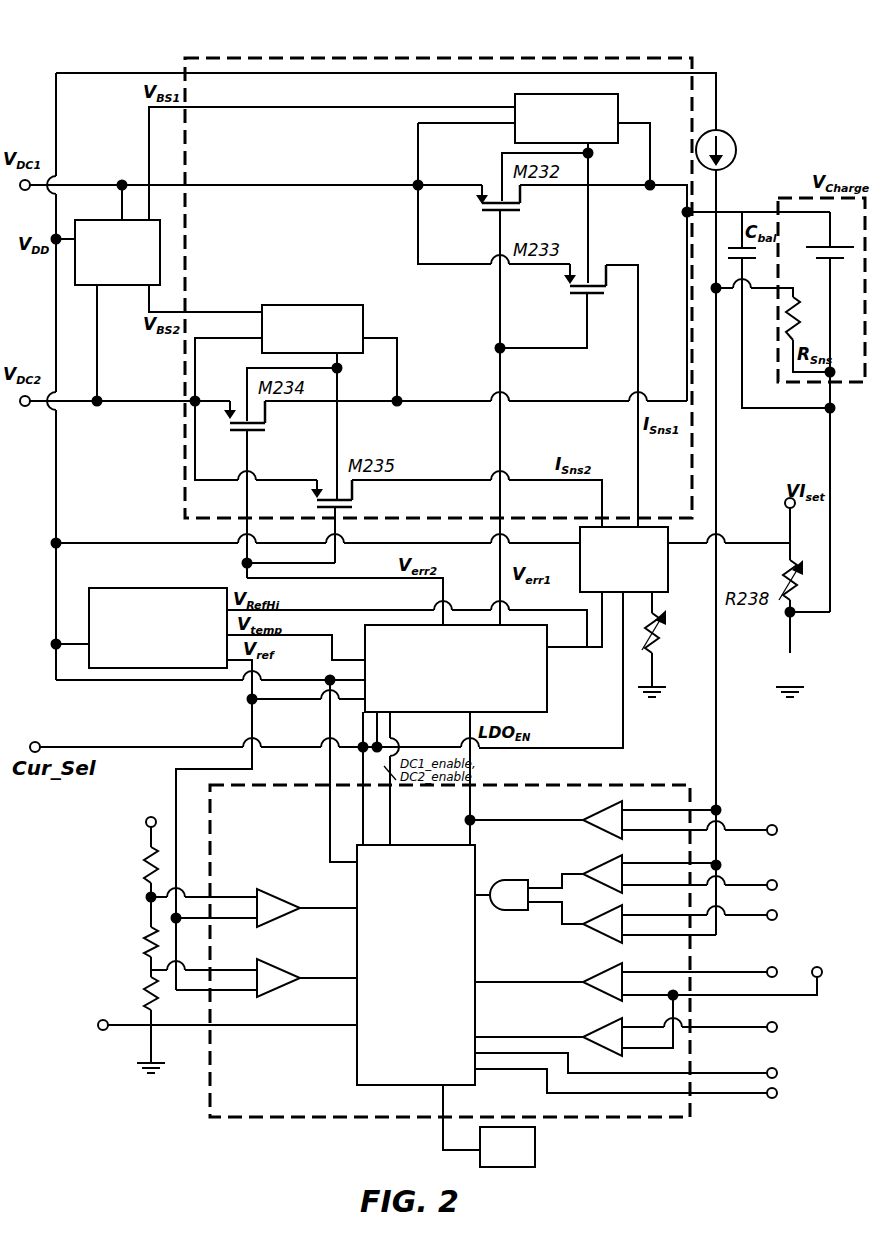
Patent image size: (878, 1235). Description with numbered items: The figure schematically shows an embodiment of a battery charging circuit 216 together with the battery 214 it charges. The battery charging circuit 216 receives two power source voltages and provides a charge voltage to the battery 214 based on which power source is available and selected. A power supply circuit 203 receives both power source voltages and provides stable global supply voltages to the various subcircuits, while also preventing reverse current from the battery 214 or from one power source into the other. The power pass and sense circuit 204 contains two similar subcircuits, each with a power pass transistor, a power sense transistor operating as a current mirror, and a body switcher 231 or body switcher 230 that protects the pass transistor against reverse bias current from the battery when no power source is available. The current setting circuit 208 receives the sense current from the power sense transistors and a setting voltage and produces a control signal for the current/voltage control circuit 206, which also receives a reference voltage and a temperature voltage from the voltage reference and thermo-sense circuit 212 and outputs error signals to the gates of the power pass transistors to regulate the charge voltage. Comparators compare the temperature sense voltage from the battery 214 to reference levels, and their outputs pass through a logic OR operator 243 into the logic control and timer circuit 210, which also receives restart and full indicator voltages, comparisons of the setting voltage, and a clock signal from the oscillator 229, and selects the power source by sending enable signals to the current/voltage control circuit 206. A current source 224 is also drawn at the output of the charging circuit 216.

The battery charging circuit 216 is at (716, 51).
The current source 224 is at (738, 131).
The battery 214 is at (787, 198).
The body switcher 231 is at (618, 97).
The power supply circuit 203 is at (160, 239).
The body switcher 230 is at (363, 310).
The power pass and sense circuit 204 is at (692, 460).
The current setting circuit 208 is at (672, 535).
The voltage reference and thermo-sense circuit 212 is at (152, 588).
The current/voltage control circuit 206 is at (547, 680).
The logic OR operator 243 is at (536, 848).
The logic control and timer circuit 210 is at (297, 1118).
The oscillator 229 is at (535, 1150).